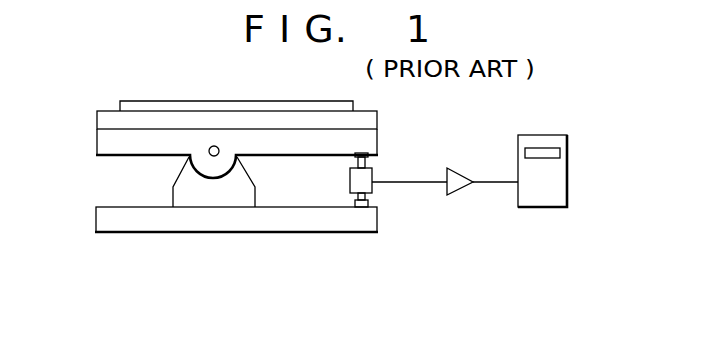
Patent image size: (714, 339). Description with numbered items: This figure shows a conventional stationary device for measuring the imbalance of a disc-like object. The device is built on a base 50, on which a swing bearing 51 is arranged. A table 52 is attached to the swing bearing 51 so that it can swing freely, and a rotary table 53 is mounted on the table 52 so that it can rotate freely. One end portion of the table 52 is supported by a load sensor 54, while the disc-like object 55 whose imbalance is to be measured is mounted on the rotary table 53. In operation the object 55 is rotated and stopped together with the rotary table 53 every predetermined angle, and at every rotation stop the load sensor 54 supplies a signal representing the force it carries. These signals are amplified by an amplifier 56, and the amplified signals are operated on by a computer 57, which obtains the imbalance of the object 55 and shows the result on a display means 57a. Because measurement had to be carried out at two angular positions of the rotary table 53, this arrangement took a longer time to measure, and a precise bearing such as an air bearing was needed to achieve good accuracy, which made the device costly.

The base 50 is at (332, 221).
The swing bearing 51 is at (217, 146).
The table 52 is at (112, 138).
The rotary table 53 is at (103, 121).
The load sensor 54 is at (372, 185).
The disc-like object 55 is at (142, 102).
The amplifier 56 is at (461, 168).
The computer 57 is at (568, 143).
The display means 57a is at (554, 158).